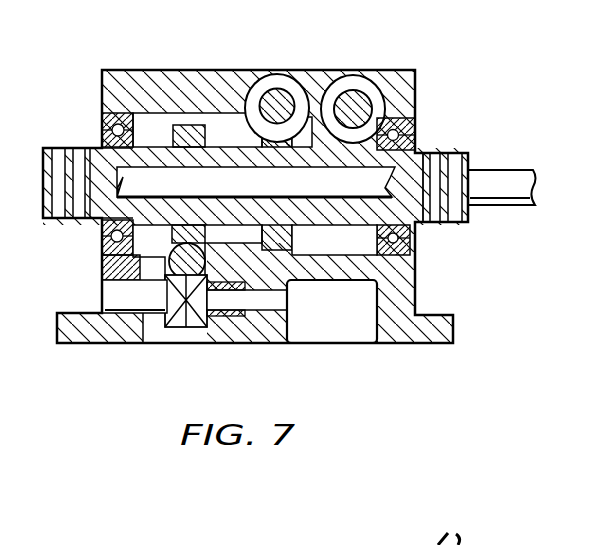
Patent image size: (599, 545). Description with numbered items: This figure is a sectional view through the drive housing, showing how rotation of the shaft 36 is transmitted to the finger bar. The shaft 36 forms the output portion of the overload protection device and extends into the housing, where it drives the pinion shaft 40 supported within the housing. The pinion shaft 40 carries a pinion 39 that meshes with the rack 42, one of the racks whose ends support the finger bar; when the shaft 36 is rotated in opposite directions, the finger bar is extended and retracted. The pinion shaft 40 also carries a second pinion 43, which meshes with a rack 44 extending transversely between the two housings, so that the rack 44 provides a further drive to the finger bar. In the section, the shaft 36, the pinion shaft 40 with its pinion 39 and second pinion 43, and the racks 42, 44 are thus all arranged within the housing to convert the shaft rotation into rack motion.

The shaft 36 is at (505, 190).
The pinion 39 is at (293, 233).
The pinion shaft 40 is at (422, 225).
The rack 42 is at (289, 100).
The second pinion 43 is at (195, 236).
The rack 44 is at (140, 266).